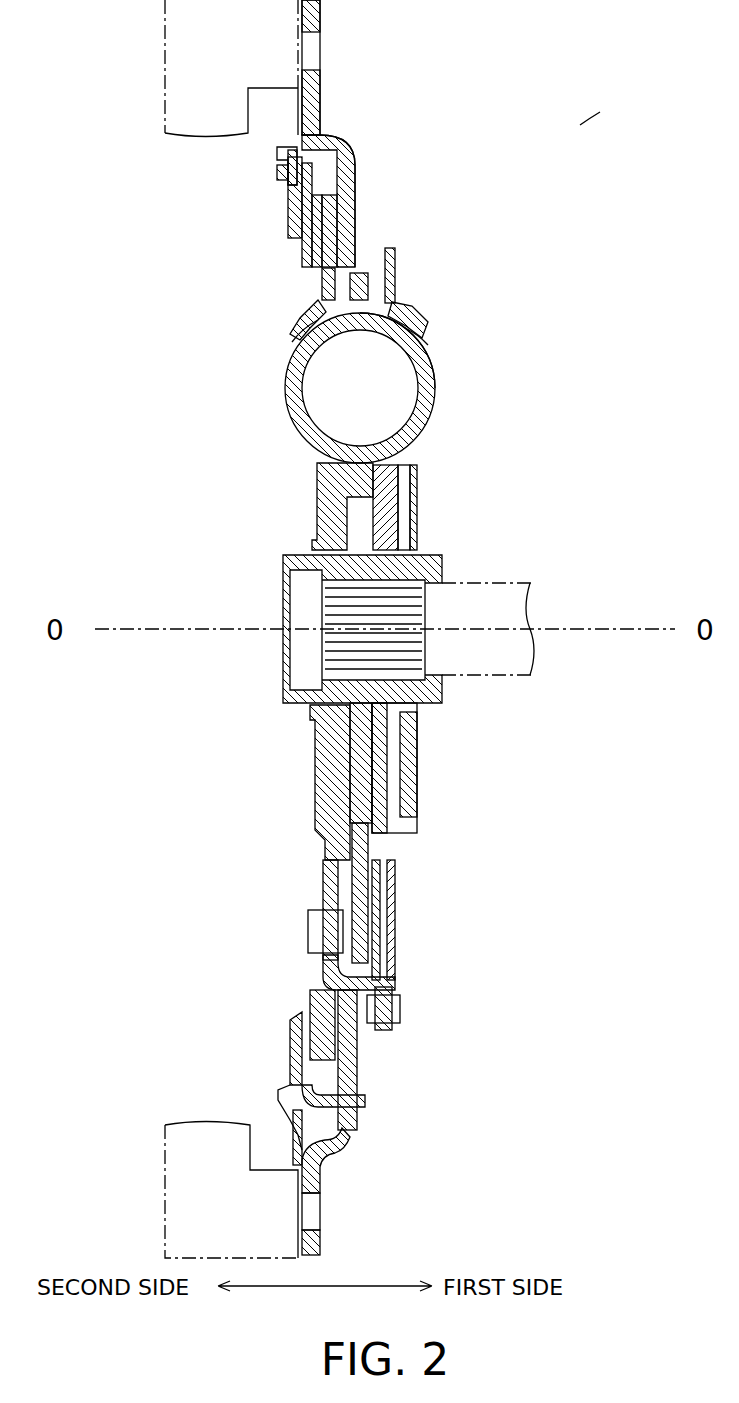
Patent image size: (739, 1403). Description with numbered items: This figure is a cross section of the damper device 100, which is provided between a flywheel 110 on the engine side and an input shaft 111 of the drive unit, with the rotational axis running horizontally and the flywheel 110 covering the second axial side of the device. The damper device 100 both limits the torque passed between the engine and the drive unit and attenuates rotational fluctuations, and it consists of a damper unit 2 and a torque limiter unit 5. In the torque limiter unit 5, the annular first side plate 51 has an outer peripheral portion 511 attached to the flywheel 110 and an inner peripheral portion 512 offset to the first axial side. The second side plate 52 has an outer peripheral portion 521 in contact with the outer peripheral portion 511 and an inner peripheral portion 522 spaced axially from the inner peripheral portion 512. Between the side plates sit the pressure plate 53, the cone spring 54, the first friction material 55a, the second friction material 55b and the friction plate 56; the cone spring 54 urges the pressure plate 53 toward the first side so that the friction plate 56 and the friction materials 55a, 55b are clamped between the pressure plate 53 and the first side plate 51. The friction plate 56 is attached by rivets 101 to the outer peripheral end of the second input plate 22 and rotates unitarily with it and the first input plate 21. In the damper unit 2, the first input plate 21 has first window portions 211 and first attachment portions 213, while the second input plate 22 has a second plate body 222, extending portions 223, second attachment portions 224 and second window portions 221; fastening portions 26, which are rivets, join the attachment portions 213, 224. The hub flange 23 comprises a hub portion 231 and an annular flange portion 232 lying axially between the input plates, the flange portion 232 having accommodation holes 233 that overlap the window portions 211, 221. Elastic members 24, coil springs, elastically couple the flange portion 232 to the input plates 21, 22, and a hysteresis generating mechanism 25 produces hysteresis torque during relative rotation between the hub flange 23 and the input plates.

The damper device 100 is at (580, 125).
The flywheel 110 is at (165, 42).
The input shaft 111 is at (515, 592).
The rivets 101 is at (308, 945).
The damper unit 2 is at (531, 295).
The first input plate 21 is at (395, 255).
The first window portions 211 is at (428, 330).
The first attachment portions 213 is at (398, 1022).
The second input plate 22 is at (300, 320).
The second window portions 221 is at (296, 340).
The second plate body 222 is at (323, 882).
The extending portions 223 is at (378, 1040).
The second attachment portions 224 is at (385, 1032).
The hub flange 23 is at (445, 542).
The hub portion 231 is at (420, 705).
The flange portion 232 is at (362, 797).
The accommodation holes 233 is at (402, 305).
The elastic members 24 is at (428, 396).
The hysteresis generating mechanism 25 is at (325, 485).
The fastening portions 26 is at (400, 1002).
The torque limiter unit 5 is at (422, 55).
The first side plate 51 is at (355, 133).
The outer peripheral portion 511 is at (320, 80).
The inner peripheral portion 512 is at (362, 150).
The second side plate 52 is at (266, 157).
The outer peripheral portion 521 is at (298, 105).
The inner peripheral portion 522 is at (288, 175).
The pressure plate 53 is at (317, 255).
The cone spring 54 is at (295, 215).
The first friction material 55a is at (337, 215).
The second friction material 55b is at (305, 245).
The friction plate 56 is at (330, 290).